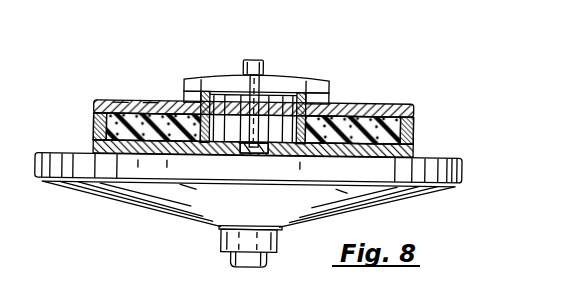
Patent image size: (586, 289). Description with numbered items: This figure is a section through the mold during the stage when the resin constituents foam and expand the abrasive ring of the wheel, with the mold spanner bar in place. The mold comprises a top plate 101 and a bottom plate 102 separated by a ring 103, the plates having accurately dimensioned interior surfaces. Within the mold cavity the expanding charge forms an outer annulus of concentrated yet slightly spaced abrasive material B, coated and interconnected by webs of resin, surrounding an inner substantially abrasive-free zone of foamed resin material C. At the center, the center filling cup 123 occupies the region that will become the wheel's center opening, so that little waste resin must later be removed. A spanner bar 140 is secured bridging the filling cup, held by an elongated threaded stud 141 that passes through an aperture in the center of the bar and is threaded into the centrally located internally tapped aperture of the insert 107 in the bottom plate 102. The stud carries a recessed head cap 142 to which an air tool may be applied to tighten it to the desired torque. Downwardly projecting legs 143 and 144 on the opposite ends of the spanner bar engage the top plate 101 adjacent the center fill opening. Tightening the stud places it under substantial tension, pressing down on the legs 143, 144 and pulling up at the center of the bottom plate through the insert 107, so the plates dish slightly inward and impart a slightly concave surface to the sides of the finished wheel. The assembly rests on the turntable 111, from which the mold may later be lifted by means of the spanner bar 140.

The top plate 101 is at (377, 110).
The bottom plate 102 is at (344, 157).
The ring 103 is at (403, 132).
The insert 107 is at (244, 151).
The turntable 111 is at (432, 182).
The center filling cup 123 is at (226, 93).
The spanner bar 140 is at (296, 83).
The threaded stud 141 is at (260, 118).
The recessed head cap 142 is at (253, 60).
The leg 143 is at (182, 100).
The leg 144 is at (326, 98).
The abrasive material B is at (122, 113).
The foamed resin material C is at (153, 115).